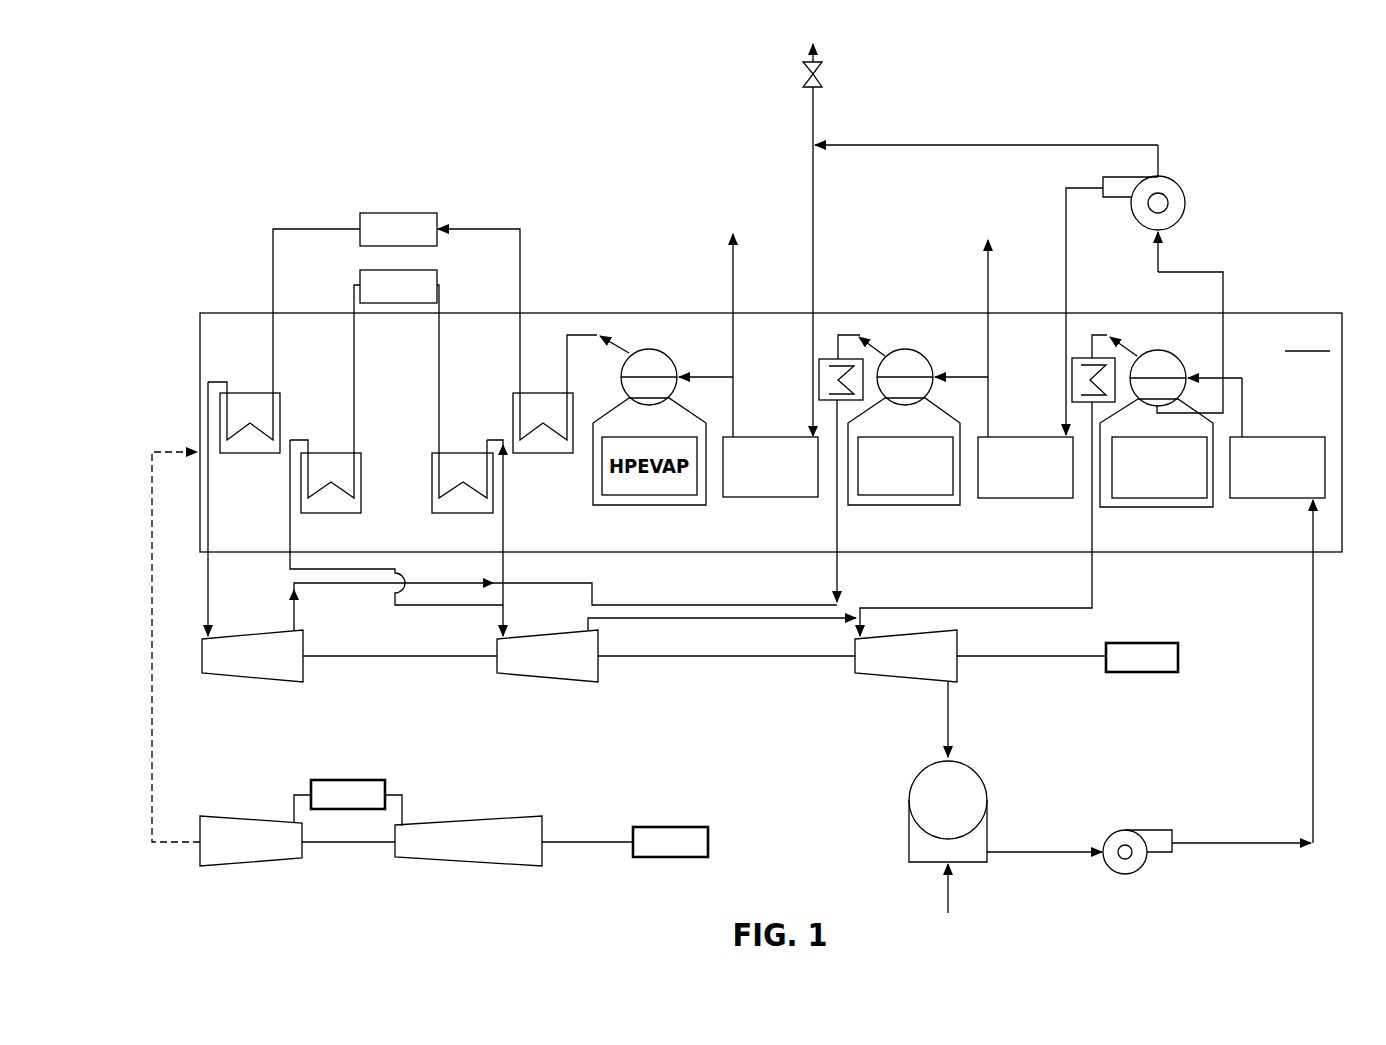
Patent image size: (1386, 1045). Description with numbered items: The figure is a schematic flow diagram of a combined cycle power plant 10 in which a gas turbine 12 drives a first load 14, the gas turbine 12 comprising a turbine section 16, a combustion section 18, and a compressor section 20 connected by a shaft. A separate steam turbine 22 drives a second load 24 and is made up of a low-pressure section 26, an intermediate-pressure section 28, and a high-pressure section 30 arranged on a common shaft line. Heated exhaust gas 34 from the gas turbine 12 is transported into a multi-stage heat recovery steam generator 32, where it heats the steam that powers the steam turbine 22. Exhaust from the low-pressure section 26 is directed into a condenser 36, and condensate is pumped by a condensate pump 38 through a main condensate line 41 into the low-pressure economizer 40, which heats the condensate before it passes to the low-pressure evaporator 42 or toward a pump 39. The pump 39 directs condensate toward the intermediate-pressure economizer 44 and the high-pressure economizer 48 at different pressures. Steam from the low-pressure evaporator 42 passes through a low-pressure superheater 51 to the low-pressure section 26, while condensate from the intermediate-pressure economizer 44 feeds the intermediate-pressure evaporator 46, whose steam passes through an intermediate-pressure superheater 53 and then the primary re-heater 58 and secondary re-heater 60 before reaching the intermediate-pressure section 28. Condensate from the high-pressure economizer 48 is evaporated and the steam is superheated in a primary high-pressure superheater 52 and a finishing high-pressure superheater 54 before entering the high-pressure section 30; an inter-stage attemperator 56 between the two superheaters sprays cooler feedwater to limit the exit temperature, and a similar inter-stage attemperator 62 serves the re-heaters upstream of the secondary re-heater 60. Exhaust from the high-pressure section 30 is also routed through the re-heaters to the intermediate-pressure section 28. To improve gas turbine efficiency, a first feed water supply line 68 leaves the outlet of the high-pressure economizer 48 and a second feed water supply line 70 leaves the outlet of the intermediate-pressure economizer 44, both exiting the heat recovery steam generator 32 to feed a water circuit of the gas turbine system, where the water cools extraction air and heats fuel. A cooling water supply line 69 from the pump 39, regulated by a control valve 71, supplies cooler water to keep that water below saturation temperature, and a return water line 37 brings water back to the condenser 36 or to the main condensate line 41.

The combined cycle power plant 10 is at (241, 192).
The gas turbine 12 is at (272, 889).
The first load 14 is at (678, 827).
The turbine section 16 is at (247, 818).
The combustion section 18 is at (342, 780).
The compressor section 20 is at (463, 820).
The steam turbine 22 is at (633, 701).
The second load 24 is at (1145, 643).
The low-pressure section 26 is at (912, 681).
The intermediate-pressure section 28 is at (559, 681).
The high-pressure section 30 is at (264, 681).
The heat recovery steam generator 32 is at (578, 313).
The heated exhaust gas 34 is at (152, 722).
The condenser 36 is at (909, 828).
The return water line 37 is at (948, 890).
The condensate pump 38 is at (1133, 872).
The pump 39 is at (1186, 203).
The low-pressure economizer 40 is at (1283, 437).
The main condensate line 41 is at (1313, 763).
The low-pressure evaporator 42 is at (1200, 507).
The intermediate-pressure economizer 44 is at (1030, 437).
The intermediate-pressure evaporator 46 is at (942, 405).
The high-pressure economizer 48 is at (777, 437).
The low-pressure superheater 51 is at (1077, 358).
The primary high-pressure superheater 52 is at (545, 453).
The intermediate-pressure superheater 53 is at (823, 357).
The finishing high-pressure superheater 54 is at (234, 453).
The inter-stage attemperator 56 is at (437, 243).
The primary re-heater 58 is at (436, 471).
The secondary re-heater 60 is at (361, 480).
The inter-stage attemperator 62 is at (362, 272).
The first feed water supply line 68 is at (732, 280).
The cooling water supply line 69 is at (810, 131).
The second feed water supply line 70 is at (990, 283).
The control valve 71 is at (818, 63).